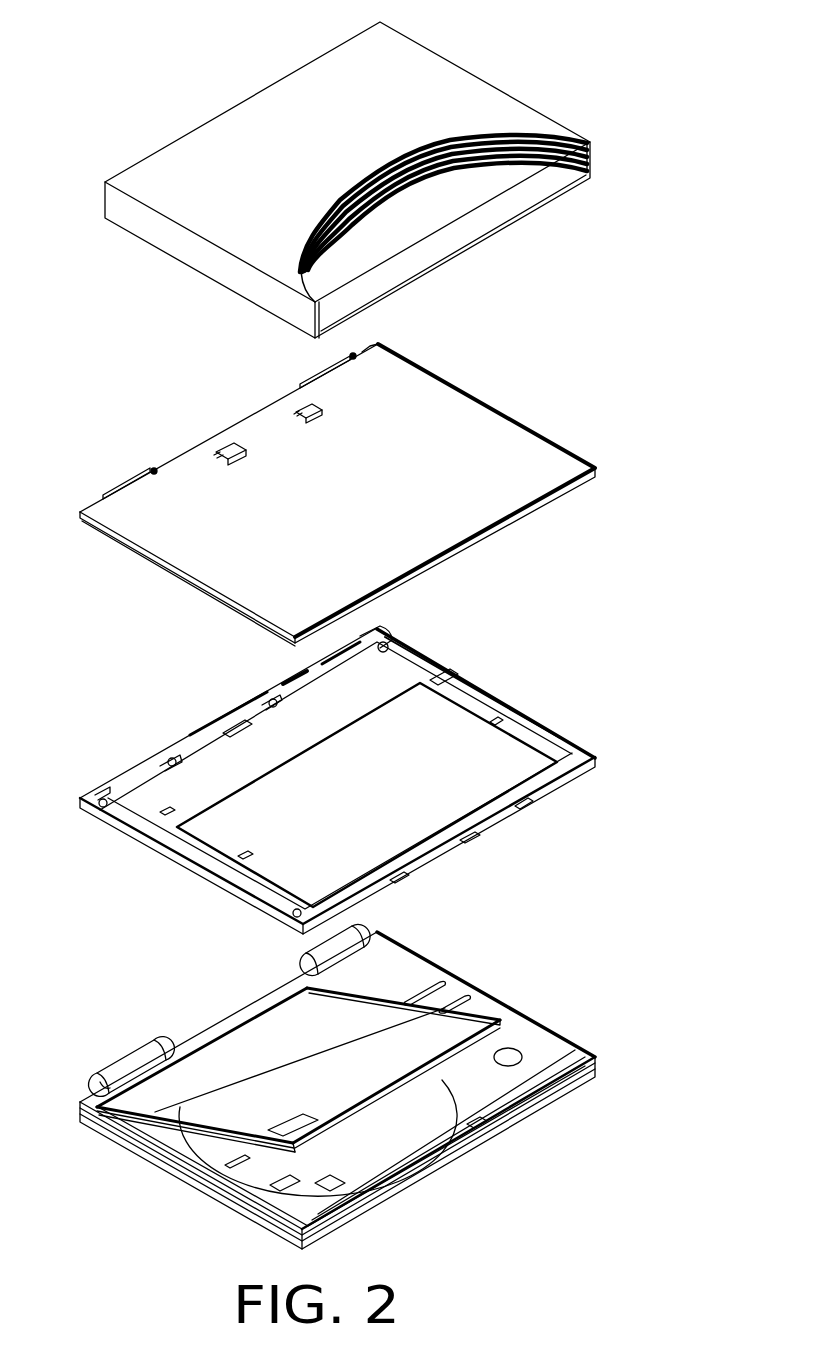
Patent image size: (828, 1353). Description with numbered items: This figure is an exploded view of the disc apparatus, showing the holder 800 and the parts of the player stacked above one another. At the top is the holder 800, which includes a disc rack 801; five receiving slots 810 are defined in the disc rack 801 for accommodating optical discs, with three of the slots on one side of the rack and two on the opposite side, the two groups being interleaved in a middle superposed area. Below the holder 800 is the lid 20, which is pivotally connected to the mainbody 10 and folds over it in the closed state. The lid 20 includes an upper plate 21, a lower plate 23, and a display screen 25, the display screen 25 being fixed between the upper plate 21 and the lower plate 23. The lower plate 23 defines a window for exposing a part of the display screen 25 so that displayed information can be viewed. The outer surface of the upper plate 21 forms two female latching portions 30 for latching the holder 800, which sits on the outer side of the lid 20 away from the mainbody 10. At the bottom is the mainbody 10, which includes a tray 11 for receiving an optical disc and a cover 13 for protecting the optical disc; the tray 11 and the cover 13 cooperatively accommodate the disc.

The holder 800 is at (396, 169).
The disc rack 801 is at (200, 150).
The receiving slots 810 is at (583, 157).
The lid 20 is at (402, 631).
The upper plate 21 is at (513, 495).
The female latching portions 30 is at (305, 410).
The lower plate 23 is at (550, 750).
The display screen 25 is at (443, 728).
The mainbody 10 is at (388, 1086).
The tray 11 is at (427, 1127).
The cover 13 is at (365, 1027).